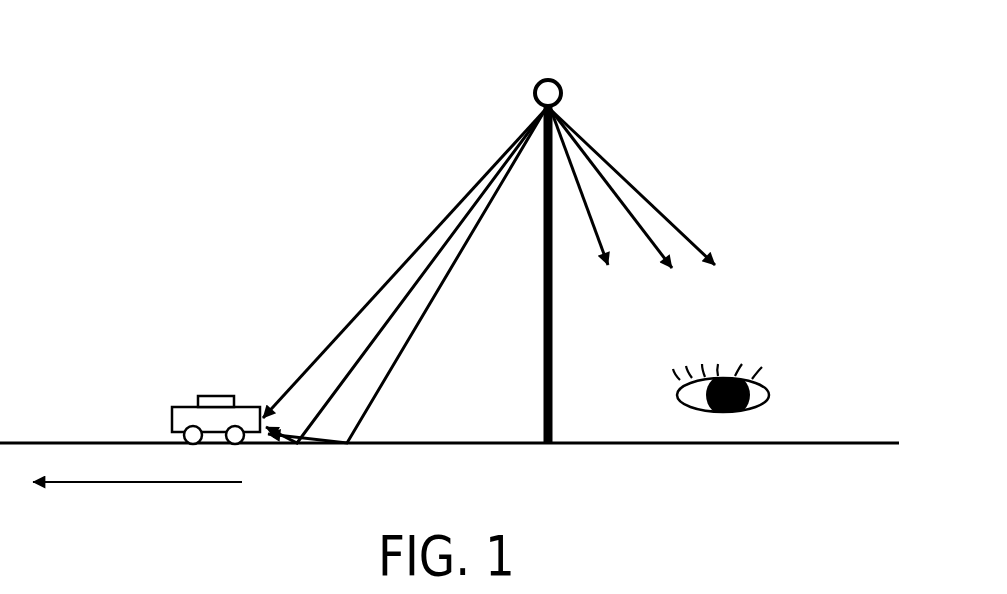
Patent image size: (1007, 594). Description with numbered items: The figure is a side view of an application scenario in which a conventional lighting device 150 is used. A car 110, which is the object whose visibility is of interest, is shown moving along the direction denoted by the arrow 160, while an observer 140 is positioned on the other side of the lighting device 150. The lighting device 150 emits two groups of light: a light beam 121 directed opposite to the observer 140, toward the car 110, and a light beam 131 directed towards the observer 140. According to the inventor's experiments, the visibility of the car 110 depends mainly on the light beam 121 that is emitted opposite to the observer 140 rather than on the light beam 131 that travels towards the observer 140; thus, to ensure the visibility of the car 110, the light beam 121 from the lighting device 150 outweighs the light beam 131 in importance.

The car 110 is at (216, 396).
The light beam opposite to the observer 121 is at (428, 300).
The light beam towards the observer 131 is at (590, 217).
The observer 140 is at (770, 395).
The lighting device 150 is at (549, 79).
The arrow 160 is at (135, 482).